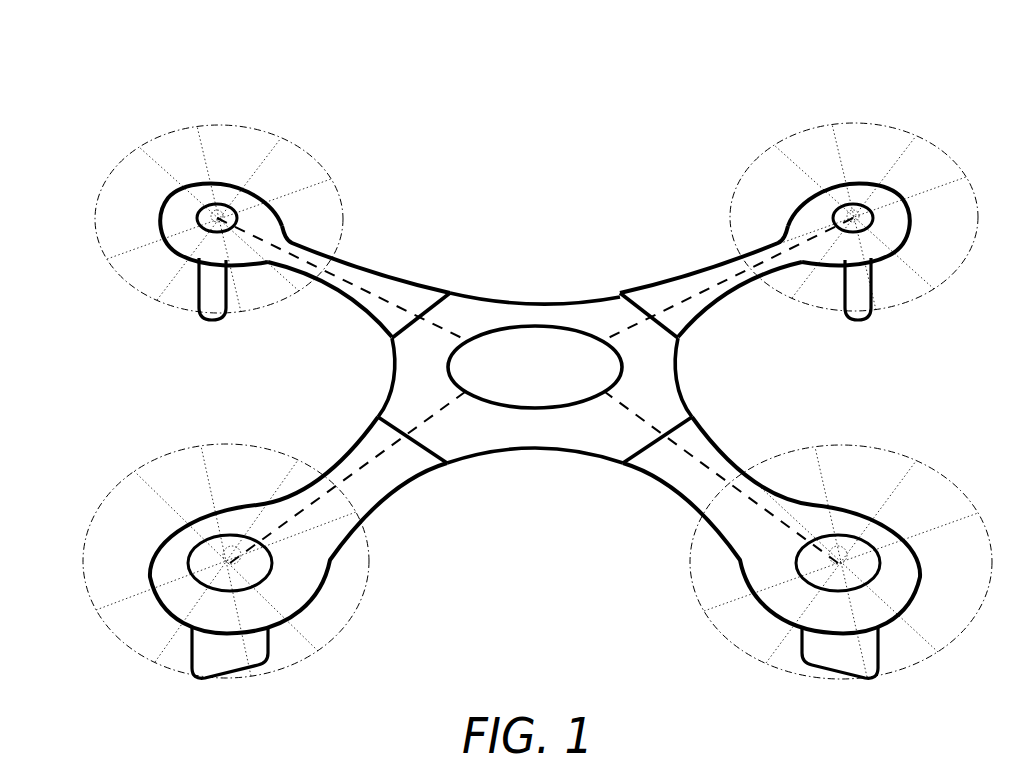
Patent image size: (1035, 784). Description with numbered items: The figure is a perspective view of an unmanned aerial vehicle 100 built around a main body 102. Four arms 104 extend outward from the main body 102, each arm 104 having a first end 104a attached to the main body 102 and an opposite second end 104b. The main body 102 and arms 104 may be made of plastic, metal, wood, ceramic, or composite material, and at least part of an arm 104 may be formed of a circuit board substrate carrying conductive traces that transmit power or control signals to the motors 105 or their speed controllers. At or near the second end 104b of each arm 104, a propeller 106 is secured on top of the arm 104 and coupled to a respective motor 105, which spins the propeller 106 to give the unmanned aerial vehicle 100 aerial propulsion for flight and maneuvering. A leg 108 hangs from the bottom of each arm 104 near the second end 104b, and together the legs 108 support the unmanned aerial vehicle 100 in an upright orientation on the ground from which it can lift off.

The unmanned aerial vehicle 100 is at (355, 95).
The main body 102 is at (533, 301).
The arms 104 is at (338, 292).
The first end 104a is at (441, 293).
The second end 104b is at (277, 218).
The motors 105 is at (210, 211).
The propellers 106 is at (910, 133).
The legs 108 is at (873, 288).